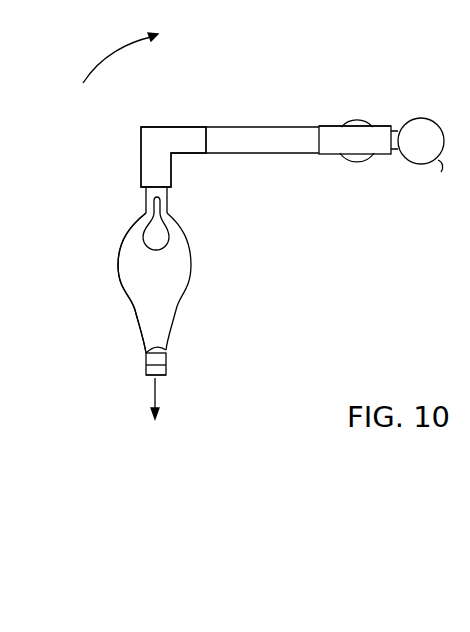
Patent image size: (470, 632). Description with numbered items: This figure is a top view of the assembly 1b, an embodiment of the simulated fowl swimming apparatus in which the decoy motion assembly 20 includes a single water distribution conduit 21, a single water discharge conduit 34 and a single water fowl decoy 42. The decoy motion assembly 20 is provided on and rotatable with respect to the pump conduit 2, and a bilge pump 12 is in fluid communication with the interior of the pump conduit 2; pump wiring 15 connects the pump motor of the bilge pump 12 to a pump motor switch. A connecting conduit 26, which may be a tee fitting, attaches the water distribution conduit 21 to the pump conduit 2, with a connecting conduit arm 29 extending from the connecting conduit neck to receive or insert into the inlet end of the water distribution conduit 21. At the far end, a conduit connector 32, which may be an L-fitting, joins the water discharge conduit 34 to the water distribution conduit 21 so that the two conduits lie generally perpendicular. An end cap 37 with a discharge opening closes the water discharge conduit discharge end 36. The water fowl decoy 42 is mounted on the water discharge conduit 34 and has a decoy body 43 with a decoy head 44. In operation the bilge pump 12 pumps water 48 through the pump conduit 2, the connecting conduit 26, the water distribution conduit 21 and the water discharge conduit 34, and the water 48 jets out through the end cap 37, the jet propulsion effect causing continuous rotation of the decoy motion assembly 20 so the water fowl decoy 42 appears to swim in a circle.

The assembly 1b is at (257, 64).
The pump conduit 2 is at (359, 118).
The bilge pump 12 is at (421, 117).
The pump wiring 15 is at (440, 165).
The decoy motion assembly 20 is at (221, 106).
The water distribution conduit 21 is at (280, 153).
The connecting conduit 26 is at (330, 121).
The connecting conduit arm 29 is at (330, 155).
The conduit connector 32 is at (150, 148).
The water discharge conduit 34 is at (144, 199).
The water discharge conduit discharge end 36 is at (160, 376).
The end cap 37 is at (163, 371).
The water fowl decoy 42 is at (124, 231).
The decoy body 43 is at (160, 282).
The decoy head 44 is at (157, 233).
The water 48 is at (150, 387).